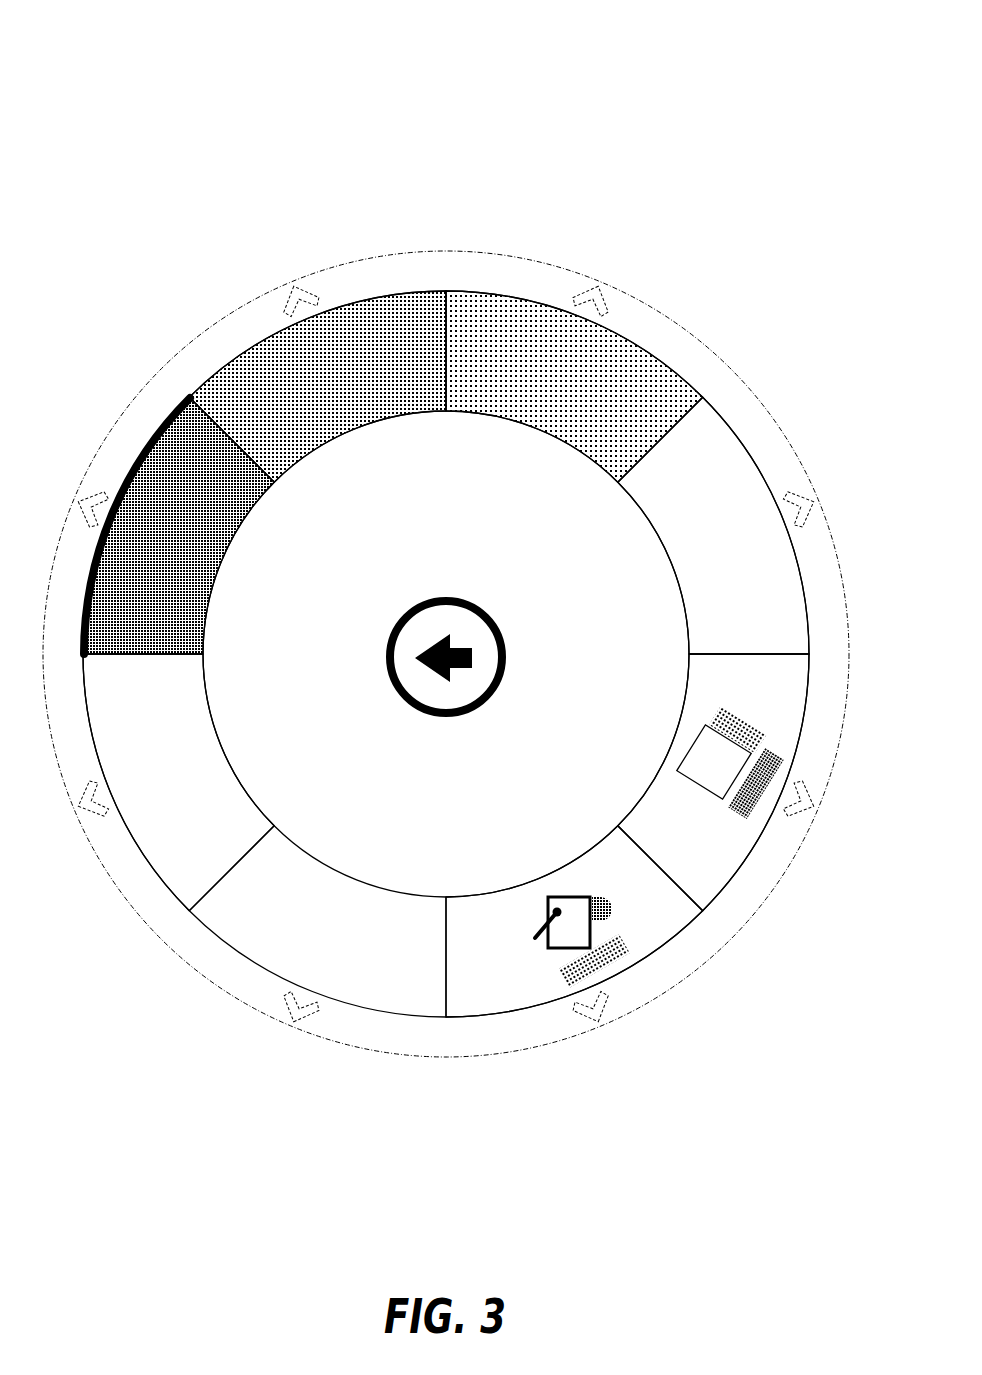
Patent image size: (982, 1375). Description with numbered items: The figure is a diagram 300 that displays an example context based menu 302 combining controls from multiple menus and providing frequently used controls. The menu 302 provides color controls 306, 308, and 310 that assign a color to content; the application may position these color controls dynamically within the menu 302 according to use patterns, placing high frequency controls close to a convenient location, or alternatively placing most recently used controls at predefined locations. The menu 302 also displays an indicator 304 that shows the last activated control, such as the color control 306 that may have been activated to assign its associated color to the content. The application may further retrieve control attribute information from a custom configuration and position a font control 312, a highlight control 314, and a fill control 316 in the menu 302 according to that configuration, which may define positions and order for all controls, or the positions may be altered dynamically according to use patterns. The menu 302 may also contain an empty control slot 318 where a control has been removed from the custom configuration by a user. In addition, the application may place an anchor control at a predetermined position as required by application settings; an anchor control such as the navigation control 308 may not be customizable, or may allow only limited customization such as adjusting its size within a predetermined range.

The diagram 300 is at (803, 32).
The context based menu 302 is at (455, 232).
The indicator 304 is at (200, 393).
The color control 306 is at (212, 558).
The color control / navigation control 308 is at (323, 403).
The color control 310 is at (530, 395).
The font control 312 is at (653, 475).
The highlight control 314 is at (760, 703).
The fill control 316 is at (620, 873).
The empty control slot 318 is at (192, 755).